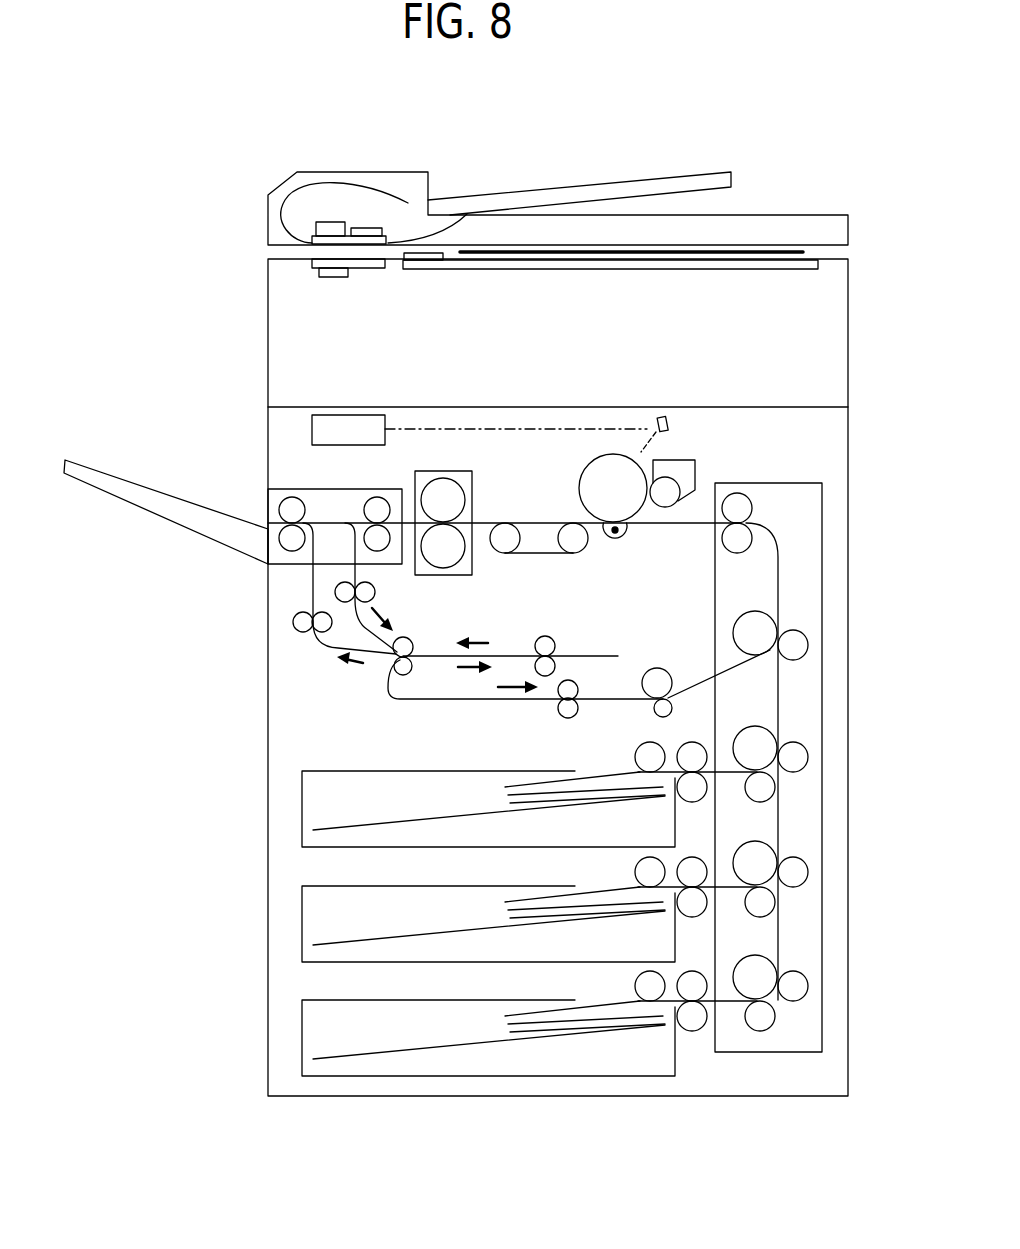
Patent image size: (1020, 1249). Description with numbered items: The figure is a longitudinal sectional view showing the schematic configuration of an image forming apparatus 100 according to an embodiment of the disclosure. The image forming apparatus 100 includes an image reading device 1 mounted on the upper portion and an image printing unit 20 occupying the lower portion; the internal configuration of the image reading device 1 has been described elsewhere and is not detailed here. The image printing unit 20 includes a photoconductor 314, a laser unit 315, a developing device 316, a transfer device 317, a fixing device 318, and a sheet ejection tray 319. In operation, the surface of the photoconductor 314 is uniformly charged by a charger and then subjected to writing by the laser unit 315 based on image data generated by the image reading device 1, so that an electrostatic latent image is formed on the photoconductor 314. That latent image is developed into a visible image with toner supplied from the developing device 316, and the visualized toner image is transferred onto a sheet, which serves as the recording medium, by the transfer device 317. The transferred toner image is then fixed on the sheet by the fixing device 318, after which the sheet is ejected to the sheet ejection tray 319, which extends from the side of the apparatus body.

The image forming apparatus 100 is at (784, 146).
The image reading device 1 is at (257, 328).
The image printing unit 20 is at (257, 704).
The photoconductor 314 is at (580, 490).
The laser unit 315 is at (312, 428).
The developing device 316 is at (680, 460).
The transfer device 317 is at (616, 540).
The fixing device 318 is at (452, 576).
The sheet ejection tray 319 is at (165, 522).